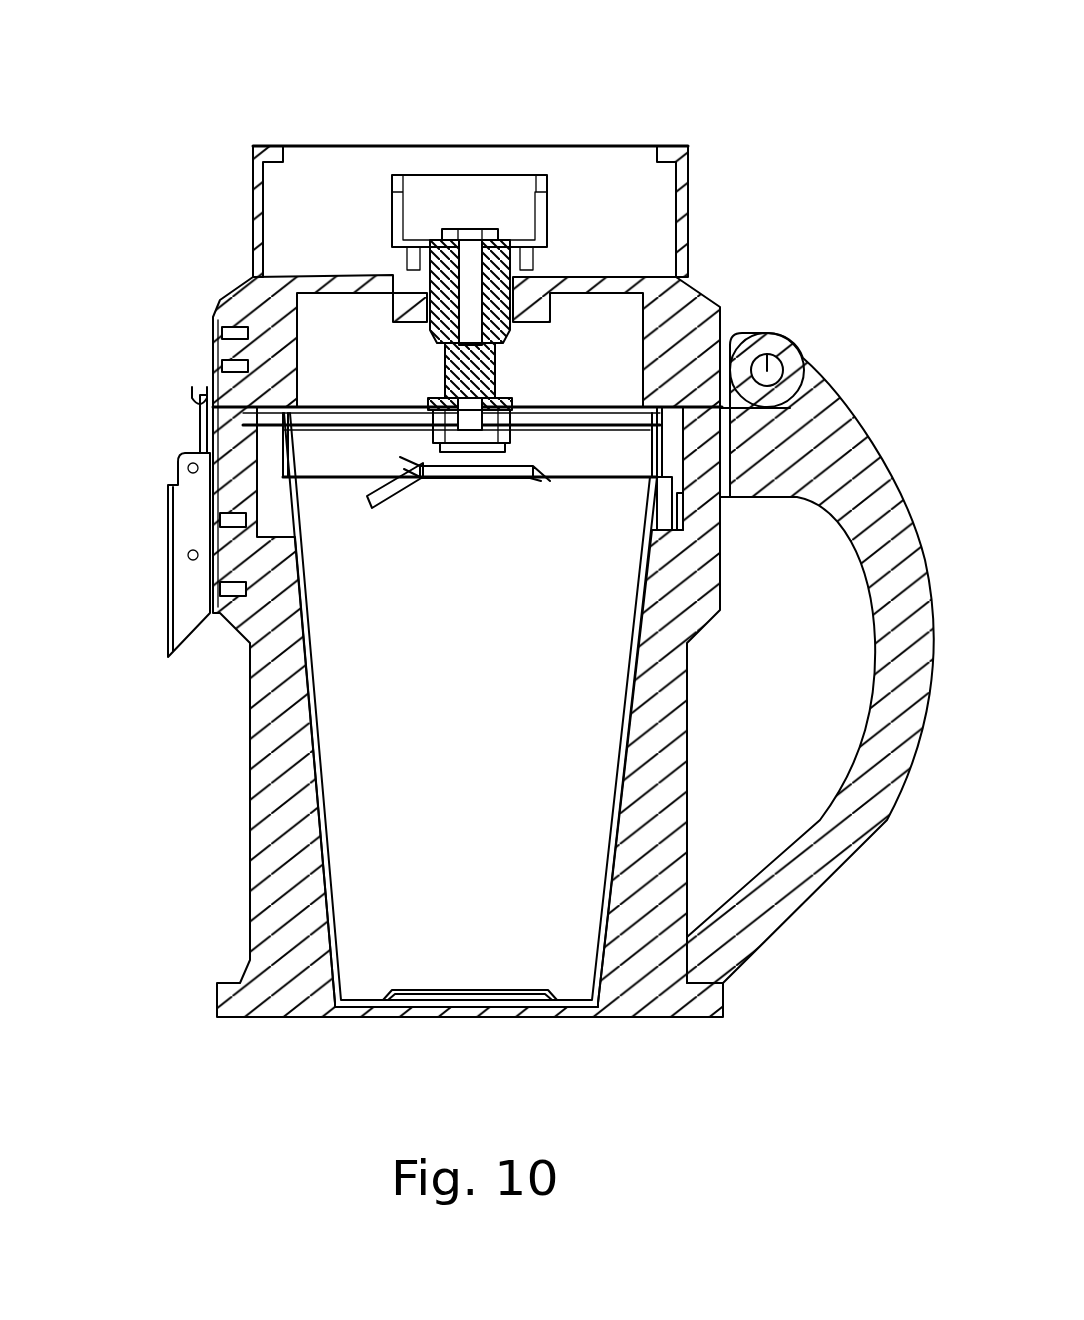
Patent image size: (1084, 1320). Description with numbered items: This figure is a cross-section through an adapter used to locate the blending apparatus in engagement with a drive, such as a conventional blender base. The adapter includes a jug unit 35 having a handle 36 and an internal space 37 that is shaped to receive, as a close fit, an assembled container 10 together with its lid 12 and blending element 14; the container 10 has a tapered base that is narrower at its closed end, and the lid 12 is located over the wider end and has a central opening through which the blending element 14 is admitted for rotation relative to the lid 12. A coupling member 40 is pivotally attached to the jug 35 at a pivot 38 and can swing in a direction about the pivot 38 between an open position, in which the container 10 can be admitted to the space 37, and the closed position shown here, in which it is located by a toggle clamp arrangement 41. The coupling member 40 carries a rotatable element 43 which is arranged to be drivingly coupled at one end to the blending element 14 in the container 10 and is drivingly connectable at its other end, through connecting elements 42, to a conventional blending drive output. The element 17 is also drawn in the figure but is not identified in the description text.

The container 10 is at (630, 957).
The lid 12 is at (572, 447).
The blending element 14 is at (472, 497).
The spring tongue 17 is at (373, 507).
The jug unit 35 is at (266, 834).
The handle 36 is at (830, 862).
The internal space 37 is at (310, 753).
The pivot 38 is at (768, 365).
The coupling member 40 is at (217, 122).
The toggle clamp arrangement 41 is at (168, 548).
The connecting elements 42 is at (543, 225).
The rotatable element 43 is at (459, 140).